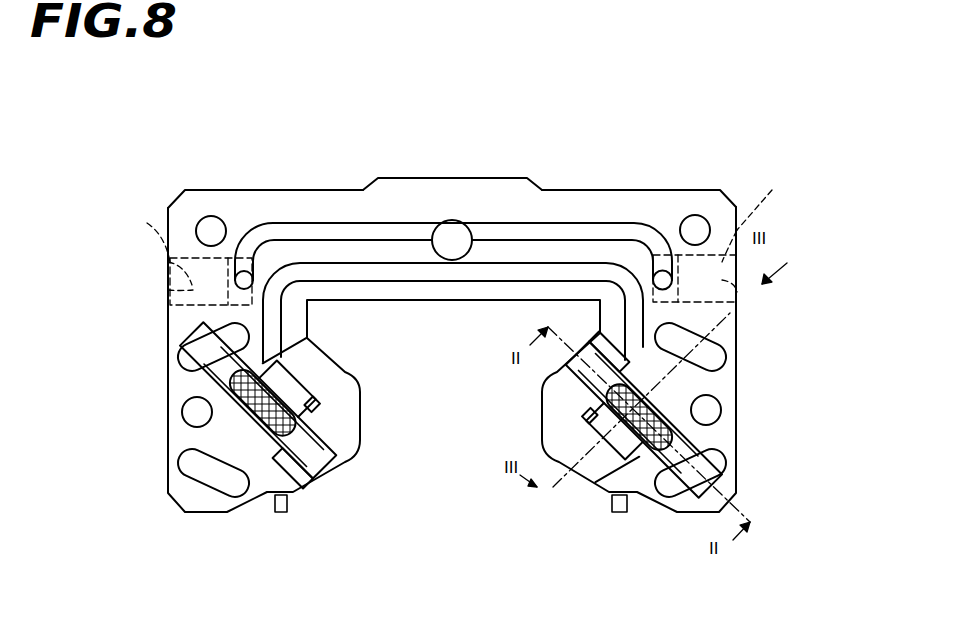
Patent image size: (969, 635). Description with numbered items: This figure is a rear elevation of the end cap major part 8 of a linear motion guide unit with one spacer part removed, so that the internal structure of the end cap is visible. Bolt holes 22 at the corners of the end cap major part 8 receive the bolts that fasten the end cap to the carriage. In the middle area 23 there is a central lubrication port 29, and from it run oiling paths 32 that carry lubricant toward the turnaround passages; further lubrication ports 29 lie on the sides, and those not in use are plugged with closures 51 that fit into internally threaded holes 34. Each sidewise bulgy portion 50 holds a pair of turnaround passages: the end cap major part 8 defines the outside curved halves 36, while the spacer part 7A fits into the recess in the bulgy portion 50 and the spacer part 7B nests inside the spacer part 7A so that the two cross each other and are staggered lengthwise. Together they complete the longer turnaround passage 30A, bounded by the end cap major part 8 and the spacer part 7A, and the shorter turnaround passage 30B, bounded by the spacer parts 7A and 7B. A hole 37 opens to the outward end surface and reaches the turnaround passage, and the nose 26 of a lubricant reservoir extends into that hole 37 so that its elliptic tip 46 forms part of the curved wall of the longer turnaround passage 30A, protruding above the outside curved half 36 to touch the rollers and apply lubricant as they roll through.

The spacer part 7A is at (295, 450).
The spacer part 7B is at (217, 463).
The end cap major part 8 is at (605, 210).
The bolt hole 22 is at (211, 228).
The middle area 23 is at (483, 195).
The nose 26 is at (237, 388).
The lubrication port 29 is at (450, 220).
The longer turnaround passage 30A is at (307, 453).
The shorter turnaround passage 30B is at (317, 367).
The oiling path 32 is at (325, 270).
The internally threaded hole 34 is at (459, 213).
The outside curved half 36 is at (305, 455).
The hole 37 is at (293, 420).
The tip 46 is at (235, 440).
The bulgy portion 50 is at (181, 322).
The closure 51 is at (172, 292).